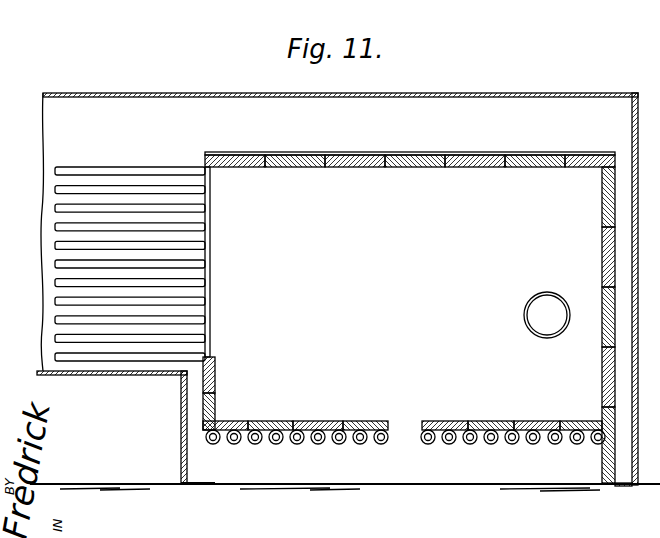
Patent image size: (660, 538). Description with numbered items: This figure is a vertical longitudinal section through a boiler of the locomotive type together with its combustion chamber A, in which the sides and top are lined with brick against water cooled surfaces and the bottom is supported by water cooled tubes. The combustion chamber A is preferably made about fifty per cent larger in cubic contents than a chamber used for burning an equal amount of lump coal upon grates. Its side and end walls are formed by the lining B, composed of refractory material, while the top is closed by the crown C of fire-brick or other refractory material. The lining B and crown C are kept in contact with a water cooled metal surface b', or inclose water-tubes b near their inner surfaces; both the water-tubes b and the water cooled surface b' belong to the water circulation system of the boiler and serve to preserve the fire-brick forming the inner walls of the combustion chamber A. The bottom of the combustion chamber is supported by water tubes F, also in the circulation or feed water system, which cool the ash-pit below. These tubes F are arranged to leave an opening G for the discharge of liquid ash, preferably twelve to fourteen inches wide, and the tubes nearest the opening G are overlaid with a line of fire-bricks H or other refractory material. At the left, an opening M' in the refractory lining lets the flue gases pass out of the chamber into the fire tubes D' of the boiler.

The fire tubes D' is at (130, 251).
The opening in the refractory lining M' is at (218, 298).
The combustion chamber A is at (467, 308).
The crown of the combustion chamber C is at (410, 168).
The water cooled metal surface b' is at (340, 123).
The lining of the combustion chamber B is at (612, 266).
The water-tubes b is at (636, 289).
The opening for the discharge of liquid ash G is at (305, 425).
The line of fire-bricks H is at (437, 427).
The water tubes F is at (426, 443).